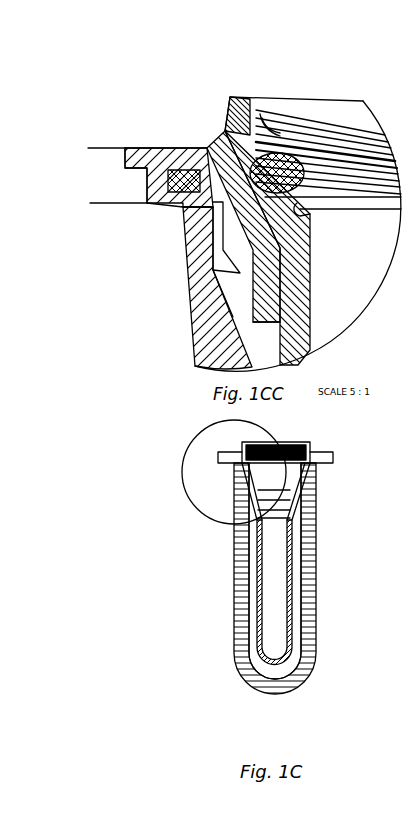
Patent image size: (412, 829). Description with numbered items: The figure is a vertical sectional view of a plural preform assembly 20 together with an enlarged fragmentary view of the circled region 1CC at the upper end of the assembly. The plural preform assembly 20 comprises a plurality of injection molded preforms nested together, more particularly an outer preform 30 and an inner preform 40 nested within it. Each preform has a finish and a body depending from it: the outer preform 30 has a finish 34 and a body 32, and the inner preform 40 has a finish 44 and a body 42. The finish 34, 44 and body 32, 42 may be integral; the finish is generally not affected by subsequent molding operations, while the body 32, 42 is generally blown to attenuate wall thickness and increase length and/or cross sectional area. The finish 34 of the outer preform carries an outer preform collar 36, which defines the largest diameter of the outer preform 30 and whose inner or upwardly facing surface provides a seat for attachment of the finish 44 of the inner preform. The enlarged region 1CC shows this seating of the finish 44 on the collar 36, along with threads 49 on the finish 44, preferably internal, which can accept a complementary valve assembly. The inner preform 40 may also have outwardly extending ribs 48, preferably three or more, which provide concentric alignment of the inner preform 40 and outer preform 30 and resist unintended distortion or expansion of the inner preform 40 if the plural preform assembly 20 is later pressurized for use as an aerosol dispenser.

In FIG. 1C, the plural preform assembly 20 is at (183, 687).
In FIG. 1CC, the outer preform 30 is at (193, 320).
In FIG. 1C, the outer preform 30 is at (240, 617).
In FIG. 1CC, the body of the outer preform 32 is at (188, 238).
In FIG. 1C, the body of the outer preform 32 is at (307, 640).
In FIG. 1CC, the finish of the outer preform 34 is at (88, 204).
In FIG. 1CC, the outer preform collar 36 is at (148, 148).
In FIG. 1CC, the inner preform 40 is at (290, 350).
In FIG. 1C, the inner preform 40 is at (290, 593).
In FIG. 1C, the body of the inner preform 42 is at (257, 563).
In FIG. 1CC, the finish of the inner preform 44 is at (185, 147).
In FIG. 1C, the finish of the inner preform 44 is at (318, 455).
In FIG. 1CC, the ribs 48 is at (293, 285).
In FIG. 1CC, the threads 49 is at (305, 113).
In FIG. 1C, the threads 49 is at (299, 446).
In FIG. 1C, the enlarged fragmentary view region 1CC is at (188, 497).